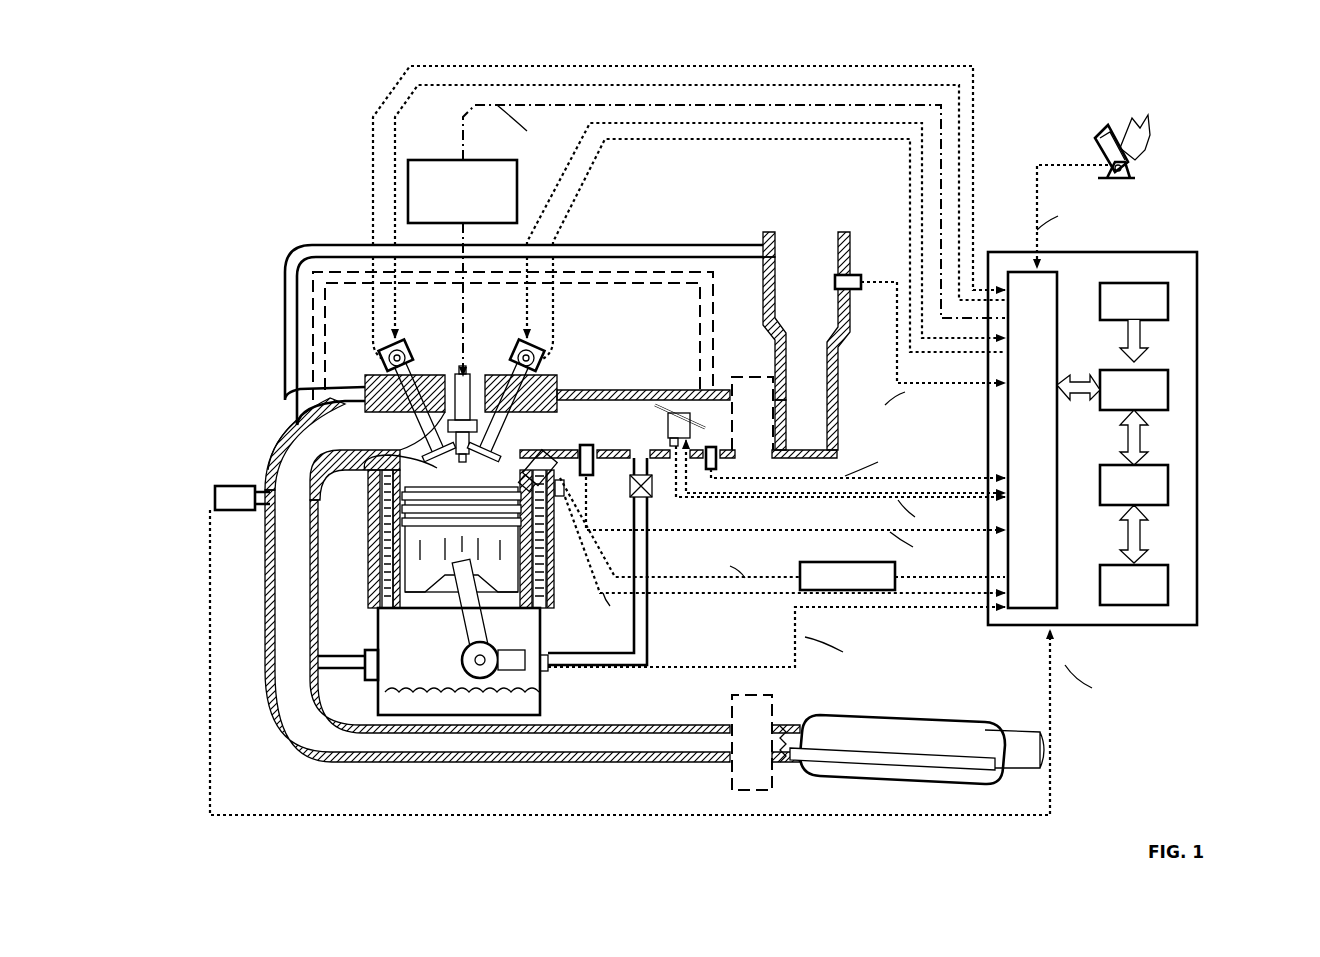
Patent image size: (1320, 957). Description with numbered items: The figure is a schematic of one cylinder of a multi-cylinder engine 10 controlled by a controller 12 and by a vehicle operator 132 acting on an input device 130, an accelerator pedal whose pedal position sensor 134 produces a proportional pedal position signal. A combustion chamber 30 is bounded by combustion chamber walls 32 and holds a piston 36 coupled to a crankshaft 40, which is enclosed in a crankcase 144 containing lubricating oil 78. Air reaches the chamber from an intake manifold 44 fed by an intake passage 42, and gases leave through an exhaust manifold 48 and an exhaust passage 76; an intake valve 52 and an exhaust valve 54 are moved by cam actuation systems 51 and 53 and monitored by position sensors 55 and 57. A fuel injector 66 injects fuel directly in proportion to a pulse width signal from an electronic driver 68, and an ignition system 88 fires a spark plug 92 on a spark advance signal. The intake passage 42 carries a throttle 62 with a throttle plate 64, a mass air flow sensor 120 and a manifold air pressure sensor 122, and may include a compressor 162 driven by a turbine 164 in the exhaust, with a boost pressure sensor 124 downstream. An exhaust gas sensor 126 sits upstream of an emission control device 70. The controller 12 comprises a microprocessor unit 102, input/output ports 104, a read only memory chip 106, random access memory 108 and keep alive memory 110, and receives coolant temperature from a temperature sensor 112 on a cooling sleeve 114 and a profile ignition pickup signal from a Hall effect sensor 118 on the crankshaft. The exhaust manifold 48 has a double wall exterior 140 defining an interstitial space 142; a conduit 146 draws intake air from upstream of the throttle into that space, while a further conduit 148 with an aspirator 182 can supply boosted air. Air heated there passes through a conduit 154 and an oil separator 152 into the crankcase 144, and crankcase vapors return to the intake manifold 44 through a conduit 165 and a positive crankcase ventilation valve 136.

The engine 10 is at (198, 352).
The controller 12 is at (1197, 255).
The combustion chamber 30 is at (382, 518).
The combustion chamber walls 32 is at (395, 608).
The piston 36 is at (478, 555).
The crankshaft 40 is at (478, 658).
The intake passage 42 is at (806, 345).
The intake manifold 44 is at (627, 424).
The exhaust manifold 48 is at (377, 456).
The cam actuation system 51 is at (522, 342).
The intake valve 52 is at (497, 405).
The cam actuation system 53 is at (398, 342).
The exhaust valve 54 is at (415, 450).
The position sensor 55 is at (540, 372).
The position sensor 57 is at (385, 378).
The throttle 62 is at (683, 412).
The throttle plate 64 is at (665, 412).
The fuel injector 66 is at (545, 462).
The electronic driver 68 is at (825, 560).
The emission control device 70 is at (965, 714).
The exhaust passage 76 is at (437, 762).
The lubricating oil 78 is at (540, 706).
The ignition system 88 is at (418, 160).
The spark plug 92 is at (458, 400).
The microprocessor unit 102 is at (1175, 392).
The input/output ports 104 is at (1060, 275).
The read only memory chip 106 is at (1170, 298).
The random access memory 108 is at (1175, 490).
The keep alive memory 110 is at (1175, 590).
The temperature sensor 112 is at (562, 500).
The cooling sleeve 114 is at (548, 568).
The Hall effect sensor 118 is at (503, 652).
The mass air flow sensor 120 is at (856, 276).
The manifold air pressure sensor 122 is at (588, 445).
The boost pressure sensor 124 is at (708, 447).
The exhaust gas sensor 126 is at (215, 485).
The input device 130 is at (1095, 138).
The vehicle operator 132 is at (1143, 128).
The pedal position sensor 134 is at (1130, 170).
The positive crankcase ventilation valve 136 is at (648, 492).
The double wall exterior 140 is at (268, 470).
The interstitial space 142 is at (270, 446).
The crankcase 144 is at (545, 680).
The conduit 146 is at (297, 248).
The conduit 148 is at (700, 287).
The oil separator 152 is at (372, 678).
The conduit 154 is at (335, 656).
The compressor 162 is at (738, 377).
The turbine 164 is at (725, 776).
The conduit 165 is at (648, 602).
The aspirator 182 is at (627, 290).